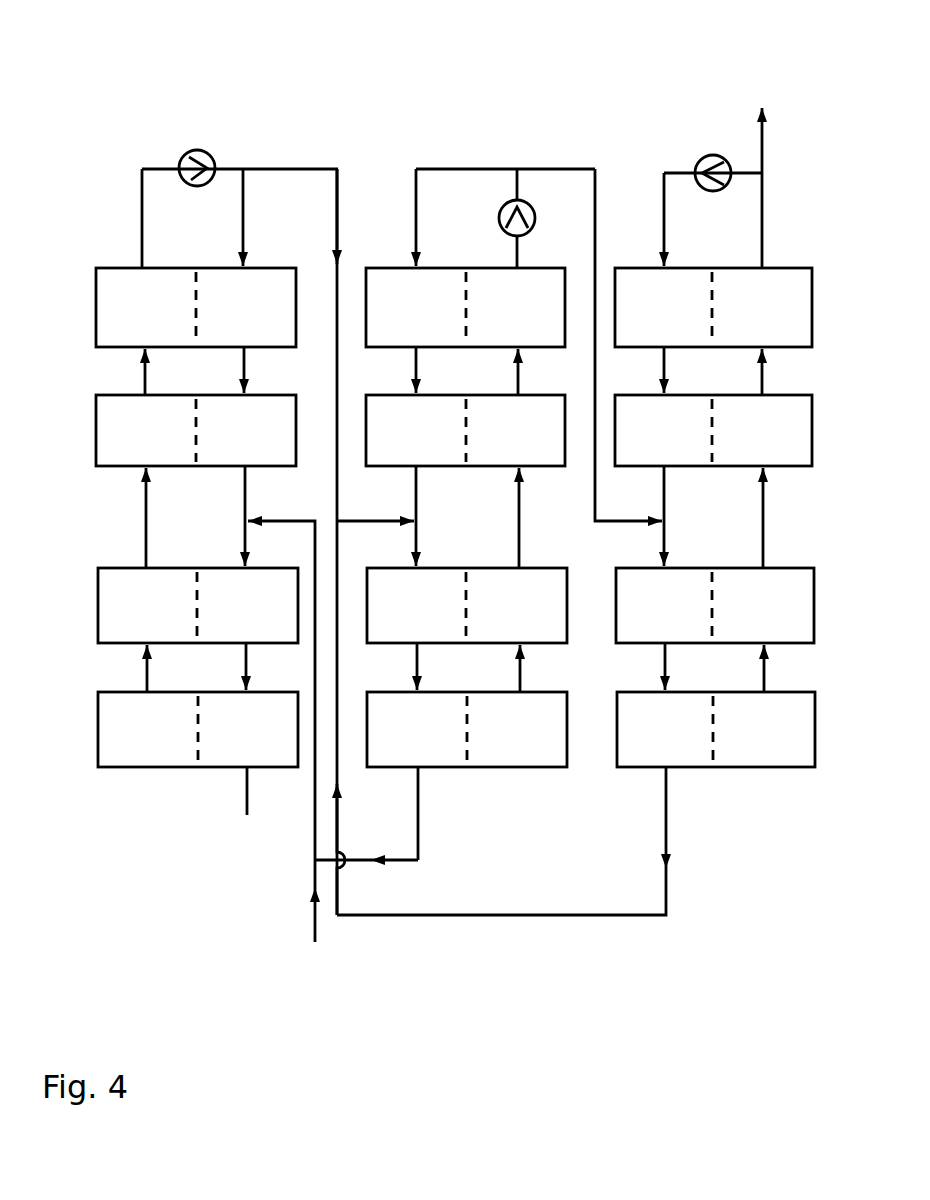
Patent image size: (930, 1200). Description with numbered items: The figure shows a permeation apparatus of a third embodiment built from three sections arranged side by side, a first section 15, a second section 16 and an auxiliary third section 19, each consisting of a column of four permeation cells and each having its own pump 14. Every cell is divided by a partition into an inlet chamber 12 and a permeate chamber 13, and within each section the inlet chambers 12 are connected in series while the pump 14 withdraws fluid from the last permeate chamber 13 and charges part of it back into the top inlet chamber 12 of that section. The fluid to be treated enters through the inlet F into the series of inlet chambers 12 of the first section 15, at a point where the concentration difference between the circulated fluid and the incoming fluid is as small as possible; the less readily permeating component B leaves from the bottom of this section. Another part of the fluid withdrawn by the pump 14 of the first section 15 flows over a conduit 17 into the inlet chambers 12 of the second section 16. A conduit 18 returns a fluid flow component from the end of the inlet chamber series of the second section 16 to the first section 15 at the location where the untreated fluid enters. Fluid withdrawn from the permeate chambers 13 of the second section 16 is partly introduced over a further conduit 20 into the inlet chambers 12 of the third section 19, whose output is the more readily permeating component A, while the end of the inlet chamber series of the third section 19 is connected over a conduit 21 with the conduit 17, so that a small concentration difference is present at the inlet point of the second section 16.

The inlet chamber 12 is at (455, 517).
The permeate chamber 13 is at (453, 517).
The pump 14 is at (207, 150).
The first section 15 is at (172, 29).
The second section 16 is at (442, 29).
The third section 19 is at (691, 29).
The conduit 17 is at (337, 368).
The conduit 18 is at (420, 842).
The further conduit 20 is at (597, 368).
The conduit 21 is at (472, 915).
The more readily permeating component A is at (762, 84).
The less readily permeating component B is at (247, 811).
The inlet for the fluid to be treated F is at (286, 751).